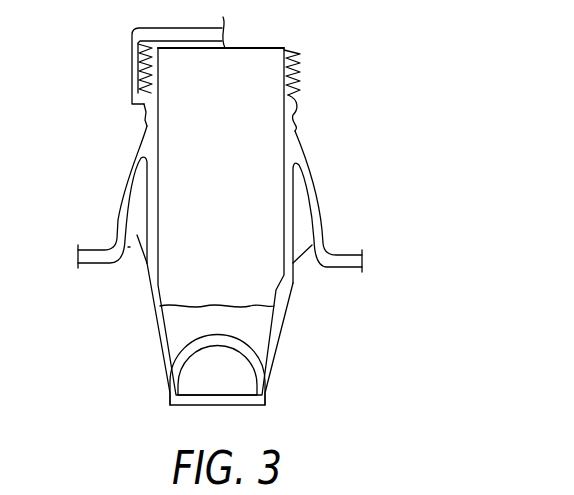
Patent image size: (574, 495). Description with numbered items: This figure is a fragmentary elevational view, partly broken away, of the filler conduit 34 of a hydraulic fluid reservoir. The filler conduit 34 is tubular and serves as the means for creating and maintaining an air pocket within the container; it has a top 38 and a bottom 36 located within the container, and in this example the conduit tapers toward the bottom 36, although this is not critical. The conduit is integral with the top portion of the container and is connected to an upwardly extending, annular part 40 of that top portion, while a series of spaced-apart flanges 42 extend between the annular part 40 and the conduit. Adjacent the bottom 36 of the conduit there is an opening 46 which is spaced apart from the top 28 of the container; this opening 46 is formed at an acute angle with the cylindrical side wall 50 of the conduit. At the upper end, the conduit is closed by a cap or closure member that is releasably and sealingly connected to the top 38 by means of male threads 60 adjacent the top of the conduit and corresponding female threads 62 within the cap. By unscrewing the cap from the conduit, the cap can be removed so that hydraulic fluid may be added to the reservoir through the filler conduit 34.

The top 28 is at (350, 255).
The filler conduit 34 is at (311, 134).
The bottom of the conduit 36 is at (222, 405).
The top of the conduit 38 is at (293, 50).
The annular part 40 is at (318, 192).
The flanges 42 is at (128, 246).
The opening 46 is at (218, 372).
The cylindrical side wall 50 is at (263, 330).
The male threads 60 is at (300, 78).
The female threads 62 is at (138, 65).